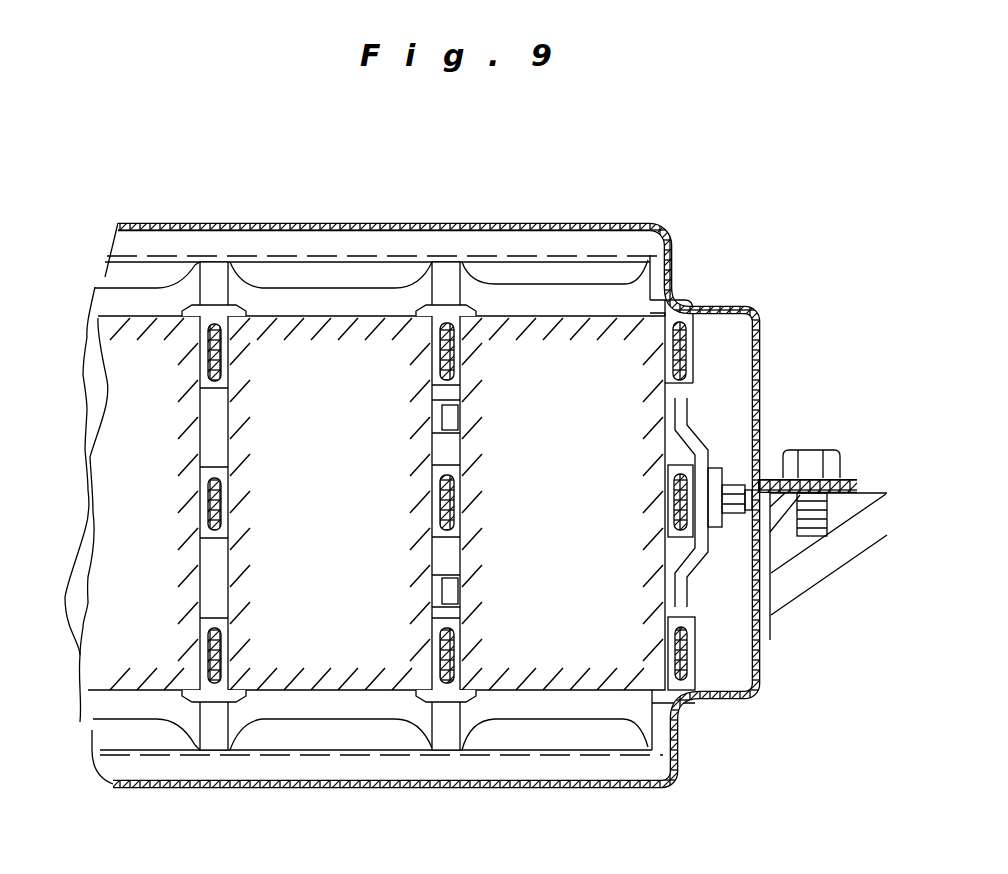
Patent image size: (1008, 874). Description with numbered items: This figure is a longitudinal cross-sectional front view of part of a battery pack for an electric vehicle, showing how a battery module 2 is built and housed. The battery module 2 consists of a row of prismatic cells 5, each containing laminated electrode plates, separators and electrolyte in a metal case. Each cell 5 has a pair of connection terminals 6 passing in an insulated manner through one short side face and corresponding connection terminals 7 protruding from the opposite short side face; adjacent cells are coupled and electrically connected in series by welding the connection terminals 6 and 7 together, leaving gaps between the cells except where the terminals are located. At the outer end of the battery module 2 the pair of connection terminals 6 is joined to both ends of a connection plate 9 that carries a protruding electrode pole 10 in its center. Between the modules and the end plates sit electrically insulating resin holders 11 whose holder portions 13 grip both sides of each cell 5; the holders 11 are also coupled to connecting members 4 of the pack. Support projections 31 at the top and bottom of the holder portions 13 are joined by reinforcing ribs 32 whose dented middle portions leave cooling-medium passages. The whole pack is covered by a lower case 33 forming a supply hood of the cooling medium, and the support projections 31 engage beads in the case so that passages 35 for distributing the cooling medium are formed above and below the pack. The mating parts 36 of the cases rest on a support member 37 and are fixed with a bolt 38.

The battery module 2 is at (104, 429).
The connecting member 4 is at (440, 352).
The cell 5 is at (147, 518).
The connection terminal 6 is at (442, 417).
The connection terminal 7 is at (446, 418).
The connection plate 9 is at (695, 455).
The electrode pole 10 is at (761, 447).
The holder 11 is at (703, 344).
The holder portion 13 is at (457, 357).
The support projection 31 is at (213, 275).
The reinforcing rib 32 is at (533, 295).
The lower case 33 is at (641, 788).
The passage 35 is at (339, 274).
The mating part 36 is at (862, 485).
The support member 37 is at (790, 582).
The bolt 38 is at (820, 450).